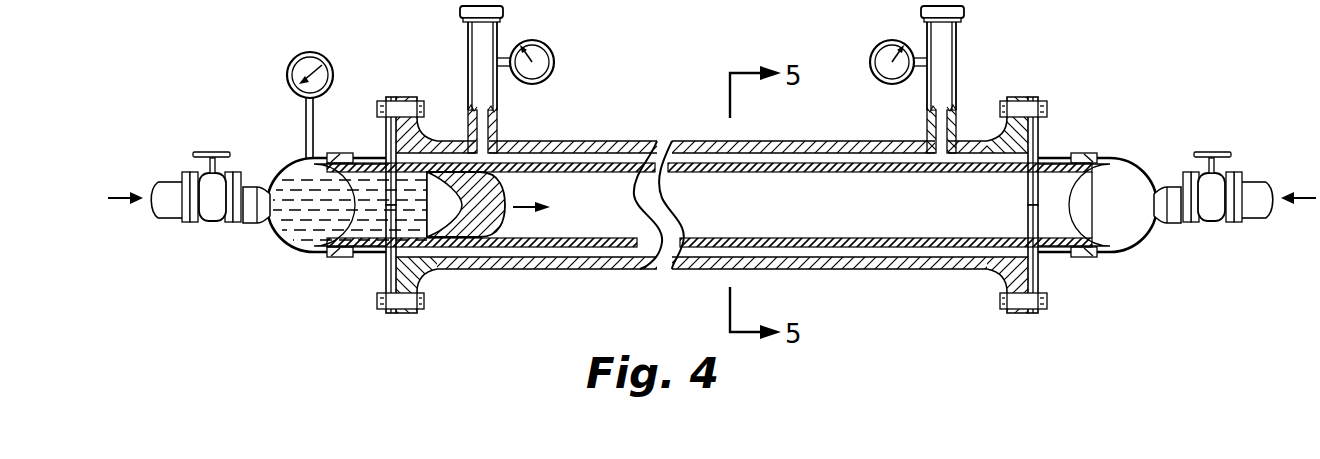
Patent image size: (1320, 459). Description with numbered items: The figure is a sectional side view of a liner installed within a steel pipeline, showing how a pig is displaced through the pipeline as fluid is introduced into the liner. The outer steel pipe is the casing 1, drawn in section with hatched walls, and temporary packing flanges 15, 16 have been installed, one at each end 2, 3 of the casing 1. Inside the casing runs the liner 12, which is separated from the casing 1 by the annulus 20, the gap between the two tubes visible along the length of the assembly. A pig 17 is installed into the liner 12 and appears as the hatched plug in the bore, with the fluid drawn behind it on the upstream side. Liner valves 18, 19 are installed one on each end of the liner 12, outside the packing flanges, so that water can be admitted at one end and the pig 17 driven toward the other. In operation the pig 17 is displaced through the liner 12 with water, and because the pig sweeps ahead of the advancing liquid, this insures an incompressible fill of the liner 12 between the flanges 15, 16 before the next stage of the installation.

The casing 1 is at (566, 147).
The first end of the casing 2 is at (428, 274).
The second end of the casing 3 is at (996, 273).
The liner 12 is at (839, 165).
The temporary packing flange 15 is at (386, 146).
The temporary packing flange 16 is at (1043, 138).
The pig 17 is at (504, 218).
The liner valve 18 is at (214, 223).
The liner valve 19 is at (1217, 226).
The annulus 20 is at (620, 160).